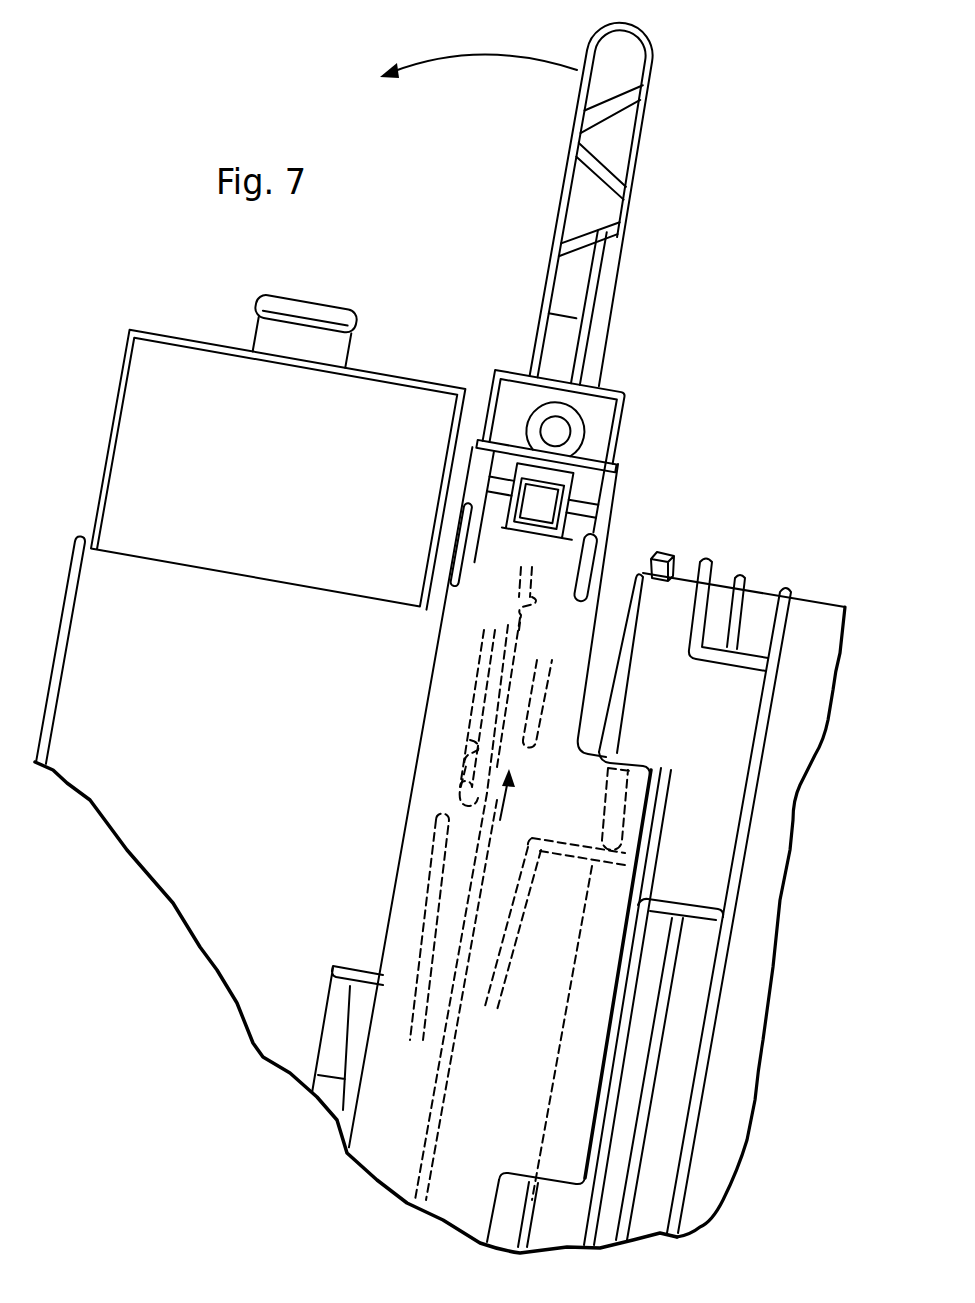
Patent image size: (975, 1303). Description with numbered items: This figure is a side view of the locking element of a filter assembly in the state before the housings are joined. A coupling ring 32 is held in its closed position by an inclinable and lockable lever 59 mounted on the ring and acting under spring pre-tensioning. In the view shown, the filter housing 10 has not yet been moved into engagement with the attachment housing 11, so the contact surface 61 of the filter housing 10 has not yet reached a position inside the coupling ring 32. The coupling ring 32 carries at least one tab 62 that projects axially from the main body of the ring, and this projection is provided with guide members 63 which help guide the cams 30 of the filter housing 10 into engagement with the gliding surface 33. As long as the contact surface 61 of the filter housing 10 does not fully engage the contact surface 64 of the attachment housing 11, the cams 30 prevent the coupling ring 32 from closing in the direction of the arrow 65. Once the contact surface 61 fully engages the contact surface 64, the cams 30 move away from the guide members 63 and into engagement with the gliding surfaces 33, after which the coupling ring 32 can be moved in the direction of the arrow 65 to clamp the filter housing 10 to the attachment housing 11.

The filter housing 10 is at (795, 720).
The attachment housing 11 is at (85, 588).
The cams 30 is at (667, 562).
The coupling ring 32 is at (610, 537).
The gliding surface 33 is at (512, 907).
The lever 59 is at (630, 203).
The contact surface 61 is at (601, 705).
The tab 62 is at (640, 822).
The guide members 63 is at (625, 857).
The contact surface 64 is at (519, 613).
The arrow 65 is at (503, 803).